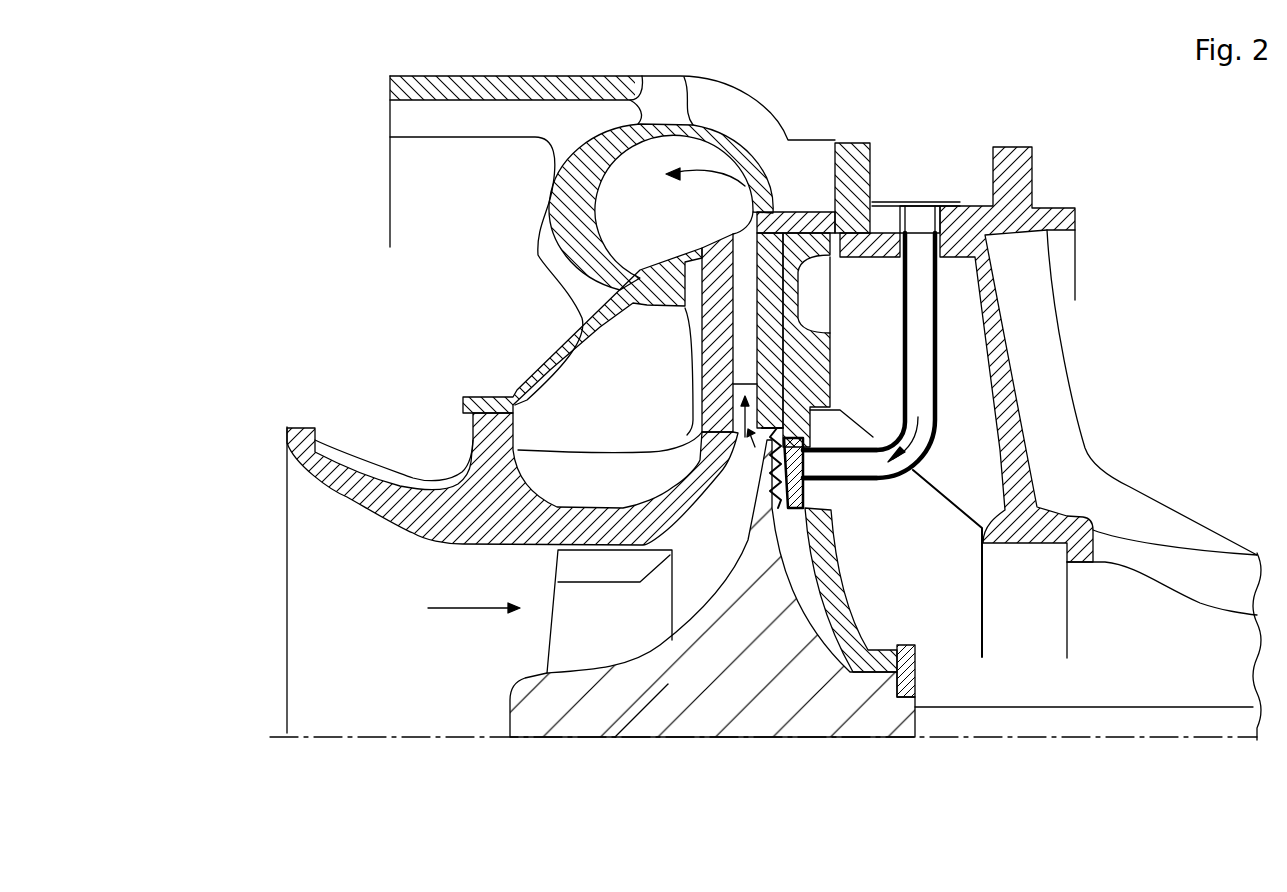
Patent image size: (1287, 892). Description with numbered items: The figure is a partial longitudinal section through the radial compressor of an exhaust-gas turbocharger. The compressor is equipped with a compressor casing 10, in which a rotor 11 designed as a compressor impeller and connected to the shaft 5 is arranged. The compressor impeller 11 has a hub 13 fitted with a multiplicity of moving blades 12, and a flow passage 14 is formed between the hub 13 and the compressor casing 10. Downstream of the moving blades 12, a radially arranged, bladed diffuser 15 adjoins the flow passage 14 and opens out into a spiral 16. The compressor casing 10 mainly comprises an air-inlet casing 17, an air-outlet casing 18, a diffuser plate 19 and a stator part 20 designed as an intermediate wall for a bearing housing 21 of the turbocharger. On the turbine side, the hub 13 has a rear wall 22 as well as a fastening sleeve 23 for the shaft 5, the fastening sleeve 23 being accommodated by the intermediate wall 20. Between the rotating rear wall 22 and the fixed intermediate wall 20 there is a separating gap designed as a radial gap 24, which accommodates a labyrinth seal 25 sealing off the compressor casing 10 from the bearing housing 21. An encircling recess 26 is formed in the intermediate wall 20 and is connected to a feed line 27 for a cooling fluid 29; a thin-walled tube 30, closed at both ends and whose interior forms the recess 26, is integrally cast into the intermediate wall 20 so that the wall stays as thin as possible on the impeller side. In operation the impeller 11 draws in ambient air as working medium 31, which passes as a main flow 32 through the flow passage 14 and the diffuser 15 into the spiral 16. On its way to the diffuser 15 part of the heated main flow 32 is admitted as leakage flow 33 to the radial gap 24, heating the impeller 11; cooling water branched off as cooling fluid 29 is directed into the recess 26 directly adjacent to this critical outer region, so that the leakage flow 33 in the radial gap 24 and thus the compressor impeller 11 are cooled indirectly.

The shaft 5 is at (1153, 722).
The compressor casing 10 is at (647, 115).
The rotor 11 is at (672, 695).
The moving blades 12 is at (592, 617).
The hub 13 is at (645, 678).
The flow passage 14 is at (747, 395).
The bladed diffuser 15 is at (747, 340).
The spiral 16 is at (680, 207).
The air-inlet casing 17 is at (753, 437).
The air-outlet casing 18 is at (595, 168).
The diffuser plate 19 is at (770, 305).
The stator part 20 is at (833, 593).
The bearing housing 21 is at (973, 223).
The rear wall 22 is at (797, 450).
The fastening sleeve 23 is at (862, 712).
The radial gap 24 is at (792, 530).
The labyrinth seal 25 is at (558, 582).
The encircling recess 26 is at (830, 480).
The feed line 27 is at (920, 325).
The cooling fluid 29 is at (915, 438).
The thin-walled tube 30 is at (807, 460).
The working medium 31 is at (457, 608).
The main flow 32 is at (823, 327).
The leakage flow 33 is at (888, 322).